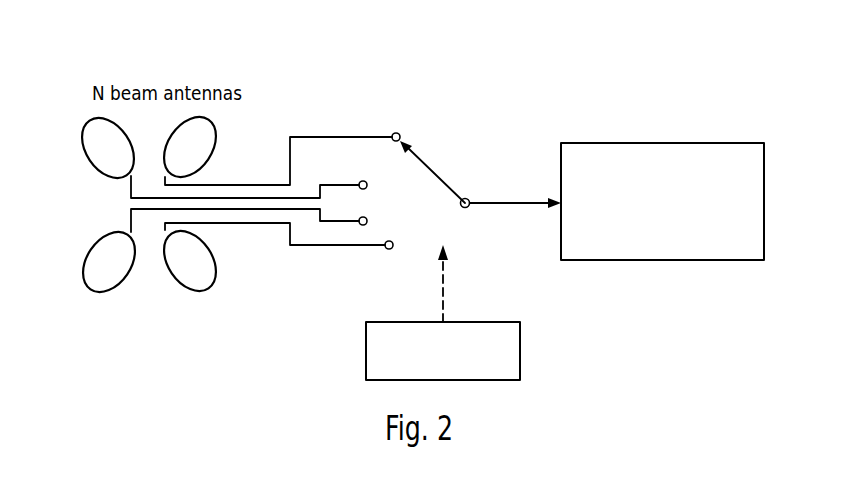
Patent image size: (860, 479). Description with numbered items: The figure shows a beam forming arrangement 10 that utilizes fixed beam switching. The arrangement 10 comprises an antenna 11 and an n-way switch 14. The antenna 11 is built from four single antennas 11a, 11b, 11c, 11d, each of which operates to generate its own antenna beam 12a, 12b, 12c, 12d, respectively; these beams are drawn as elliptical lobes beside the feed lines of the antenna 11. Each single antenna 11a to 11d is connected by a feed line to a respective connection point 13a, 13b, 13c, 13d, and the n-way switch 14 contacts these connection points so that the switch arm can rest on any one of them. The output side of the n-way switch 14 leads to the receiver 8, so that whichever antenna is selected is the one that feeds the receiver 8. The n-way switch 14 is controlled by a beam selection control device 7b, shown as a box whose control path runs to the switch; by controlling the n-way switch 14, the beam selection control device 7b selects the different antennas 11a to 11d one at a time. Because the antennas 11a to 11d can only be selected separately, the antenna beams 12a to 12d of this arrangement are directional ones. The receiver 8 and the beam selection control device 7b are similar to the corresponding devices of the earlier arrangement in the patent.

The beam selection control device 7b is at (520, 348).
The receiver 8 is at (666, 142).
The beam forming arrangement 10 is at (553, 80).
The antenna 11 is at (127, 330).
The single antenna 11a is at (150, 170).
The single antenna 11b is at (156, 236).
The single antenna 11c is at (113, 220).
The single antenna 11d is at (118, 188).
The antenna beam 12a is at (217, 128).
The antenna beam 12b is at (217, 272).
The antenna beam 12c is at (83, 277).
The antenna beam 12d is at (83, 125).
The connection point 13a is at (395, 132).
The connection point 13b is at (389, 250).
The connection point 13c is at (368, 222).
The connection point 13d is at (368, 186).
The n-way switch 14 is at (425, 160).